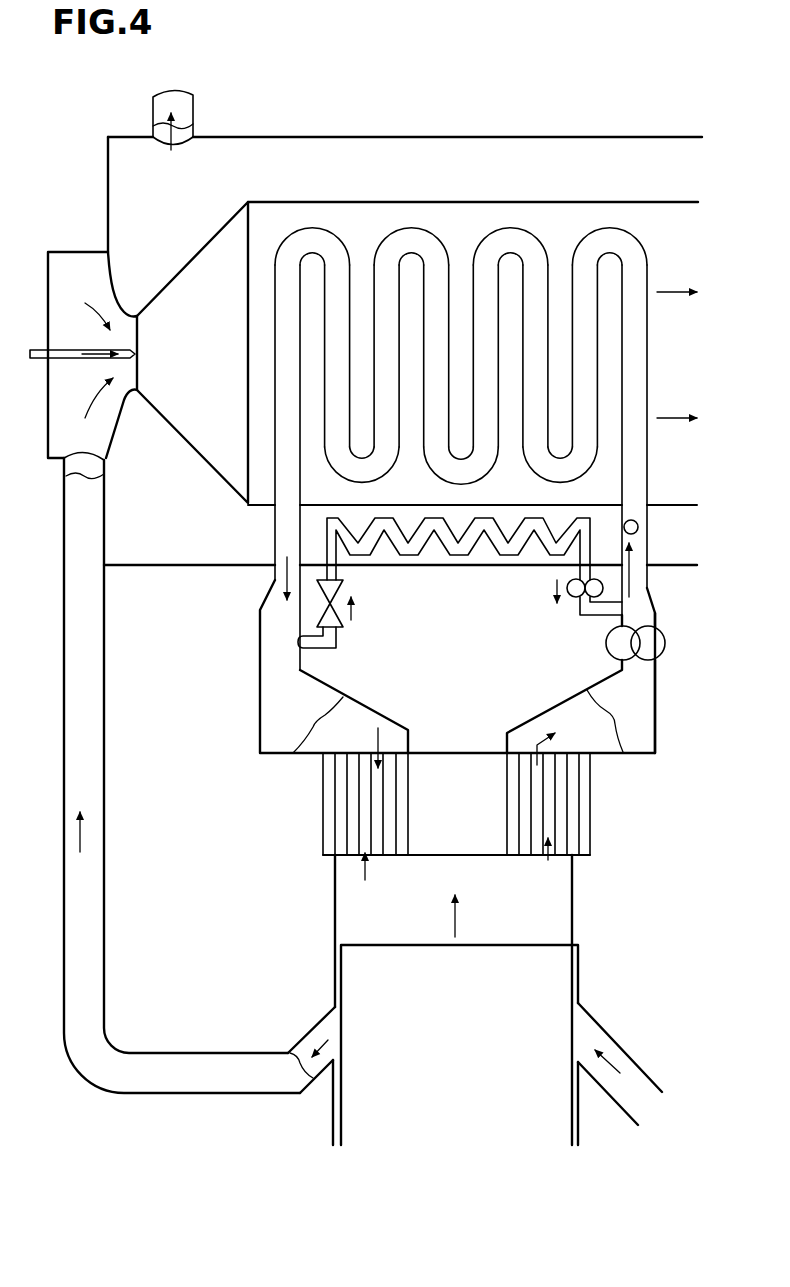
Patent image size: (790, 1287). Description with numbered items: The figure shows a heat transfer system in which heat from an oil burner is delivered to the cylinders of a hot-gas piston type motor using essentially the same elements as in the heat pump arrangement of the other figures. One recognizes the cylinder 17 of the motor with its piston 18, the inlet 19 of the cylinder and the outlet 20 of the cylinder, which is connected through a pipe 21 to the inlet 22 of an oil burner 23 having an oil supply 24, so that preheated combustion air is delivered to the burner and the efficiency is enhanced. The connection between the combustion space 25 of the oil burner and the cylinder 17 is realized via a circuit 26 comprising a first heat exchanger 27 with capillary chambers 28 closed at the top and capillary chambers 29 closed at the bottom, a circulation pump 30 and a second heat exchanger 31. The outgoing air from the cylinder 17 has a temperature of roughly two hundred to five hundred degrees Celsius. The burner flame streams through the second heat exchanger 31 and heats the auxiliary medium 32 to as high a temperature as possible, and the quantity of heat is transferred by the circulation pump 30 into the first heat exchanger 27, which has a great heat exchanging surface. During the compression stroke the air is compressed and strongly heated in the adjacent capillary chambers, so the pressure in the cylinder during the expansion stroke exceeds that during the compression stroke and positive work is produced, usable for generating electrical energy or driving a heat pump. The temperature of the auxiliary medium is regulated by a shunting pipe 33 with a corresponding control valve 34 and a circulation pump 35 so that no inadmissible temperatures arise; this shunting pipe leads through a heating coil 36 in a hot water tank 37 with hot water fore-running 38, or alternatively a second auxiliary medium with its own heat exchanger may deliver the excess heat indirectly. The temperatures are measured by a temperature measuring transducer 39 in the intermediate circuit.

The cylinder 17 is at (560, 908).
The piston 18 is at (553, 988).
The inlet 19 is at (628, 1082).
The outlet 20 is at (323, 1030).
The pipe 21 is at (90, 720).
The inlet 22 is at (129, 380).
The oil burner 23 is at (80, 233).
The oil supply 24 is at (62, 353).
The combustion space 25 is at (207, 377).
The circuit 26 is at (257, 760).
The first heat exchanger 27 is at (312, 827).
The capillary chambers 28 is at (527, 793).
The capillary chambers 29 is at (562, 830).
The circulation pump 30 is at (657, 638).
The second heat exchanger 31 is at (463, 227).
The auxiliary medium 32 is at (637, 370).
The shunting pipe 33 is at (337, 648).
The control valve 34 is at (335, 585).
The circulation pump 35 is at (575, 594).
The heating coil 36 is at (458, 553).
The hot water tank 37 is at (187, 540).
The hot water fore-running 38 is at (188, 108).
The temperature measuring transducer 39 is at (638, 527).